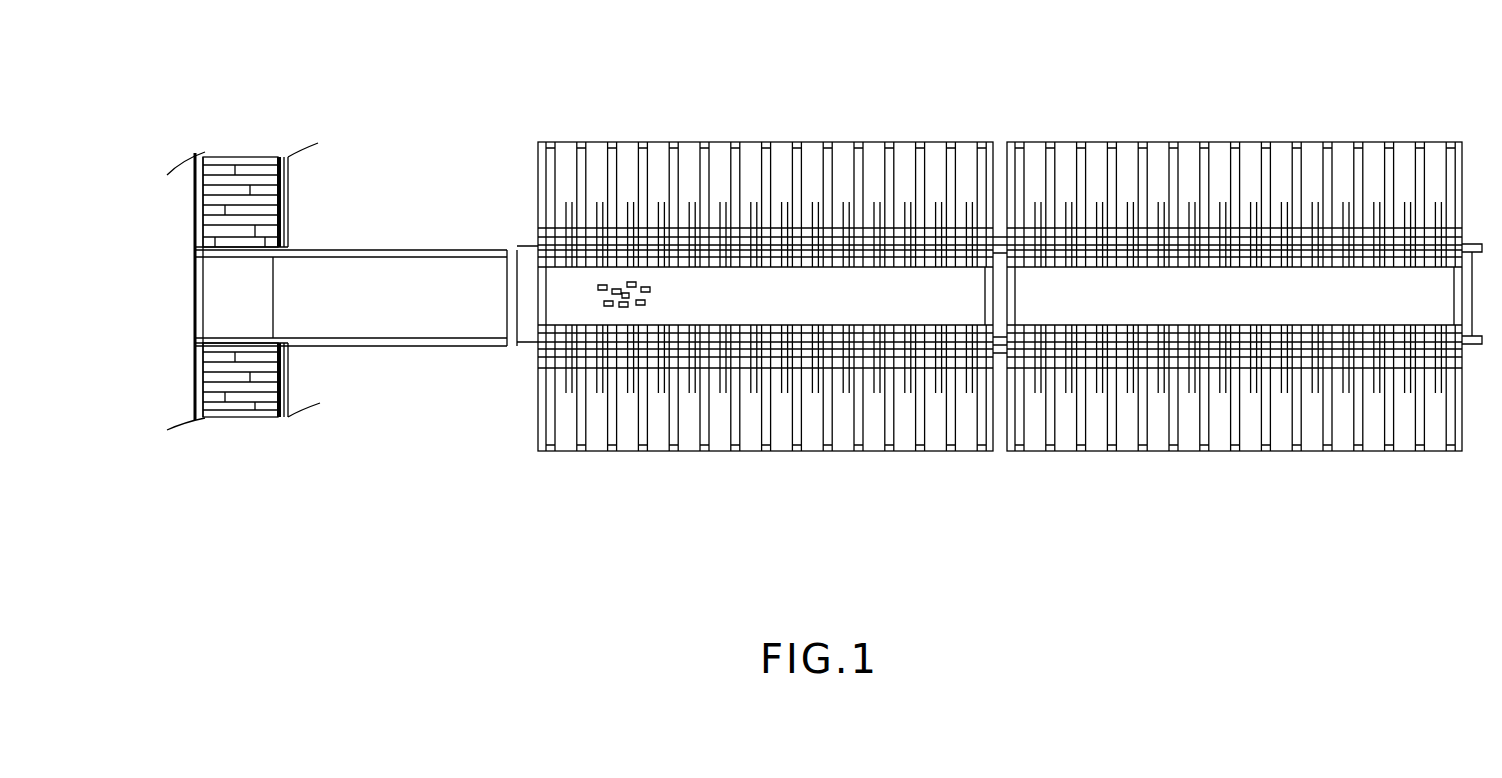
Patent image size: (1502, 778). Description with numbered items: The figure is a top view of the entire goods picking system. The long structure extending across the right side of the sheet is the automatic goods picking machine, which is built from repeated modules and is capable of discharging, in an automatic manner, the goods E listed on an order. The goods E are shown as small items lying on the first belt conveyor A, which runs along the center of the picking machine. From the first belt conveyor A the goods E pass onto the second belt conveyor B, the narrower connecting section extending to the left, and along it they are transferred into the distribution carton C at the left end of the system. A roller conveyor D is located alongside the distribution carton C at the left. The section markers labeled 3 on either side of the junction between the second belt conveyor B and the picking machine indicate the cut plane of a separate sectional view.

The first belt conveyor A is at (999, 296).
The second belt conveyor B is at (443, 327).
The distribution carton C is at (264, 318).
The roller conveyor D is at (258, 205).
The goods E is at (633, 307).
The section line 3- 3 is at (523, 510).